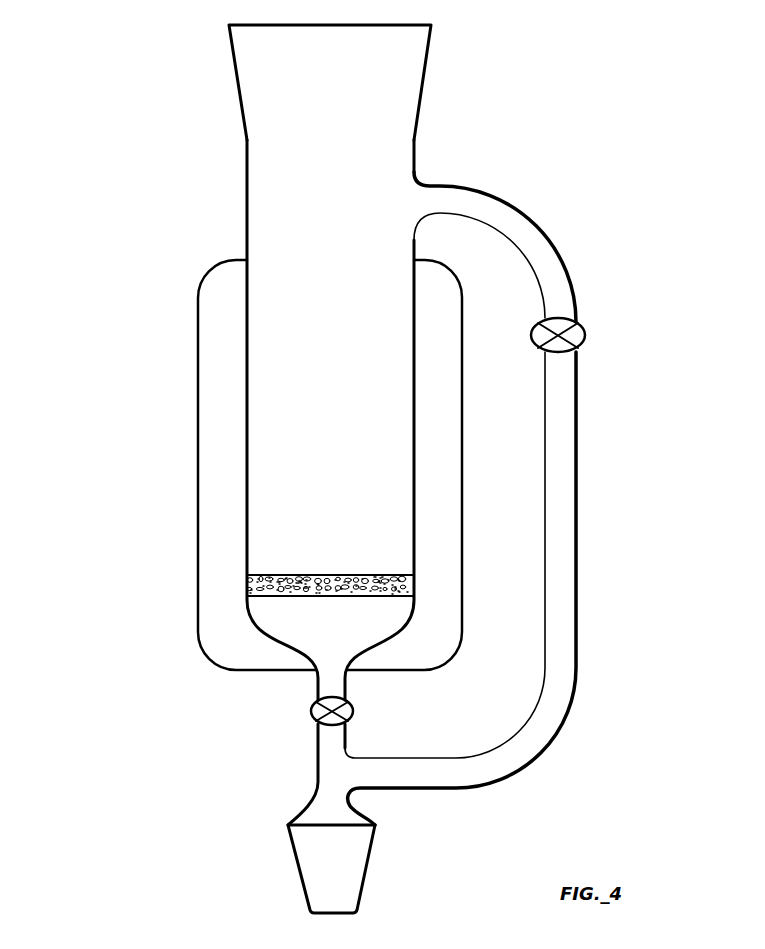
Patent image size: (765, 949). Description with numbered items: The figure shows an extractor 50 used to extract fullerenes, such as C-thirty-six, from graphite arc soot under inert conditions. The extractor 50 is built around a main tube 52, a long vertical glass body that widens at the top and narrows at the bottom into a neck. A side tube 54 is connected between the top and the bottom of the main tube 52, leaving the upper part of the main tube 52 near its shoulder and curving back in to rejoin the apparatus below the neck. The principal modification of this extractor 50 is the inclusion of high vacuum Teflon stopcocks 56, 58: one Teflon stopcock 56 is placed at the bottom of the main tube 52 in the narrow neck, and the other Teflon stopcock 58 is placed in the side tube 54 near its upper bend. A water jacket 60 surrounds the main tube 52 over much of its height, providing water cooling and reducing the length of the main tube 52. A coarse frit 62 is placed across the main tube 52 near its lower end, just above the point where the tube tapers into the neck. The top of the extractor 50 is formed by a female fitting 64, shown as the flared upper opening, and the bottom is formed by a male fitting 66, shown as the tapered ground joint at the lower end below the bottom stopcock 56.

The extractor 50 is at (632, 62).
The main tube 52 is at (245, 218).
The side tube 54 is at (578, 512).
The Teflon stopcock 56 is at (302, 710).
The Teflon stopcock 58 is at (602, 312).
The water jacket 60 is at (190, 440).
The coarse frit 62 is at (243, 585).
The female fitting 64 is at (237, 80).
The male fitting 66 is at (286, 866).